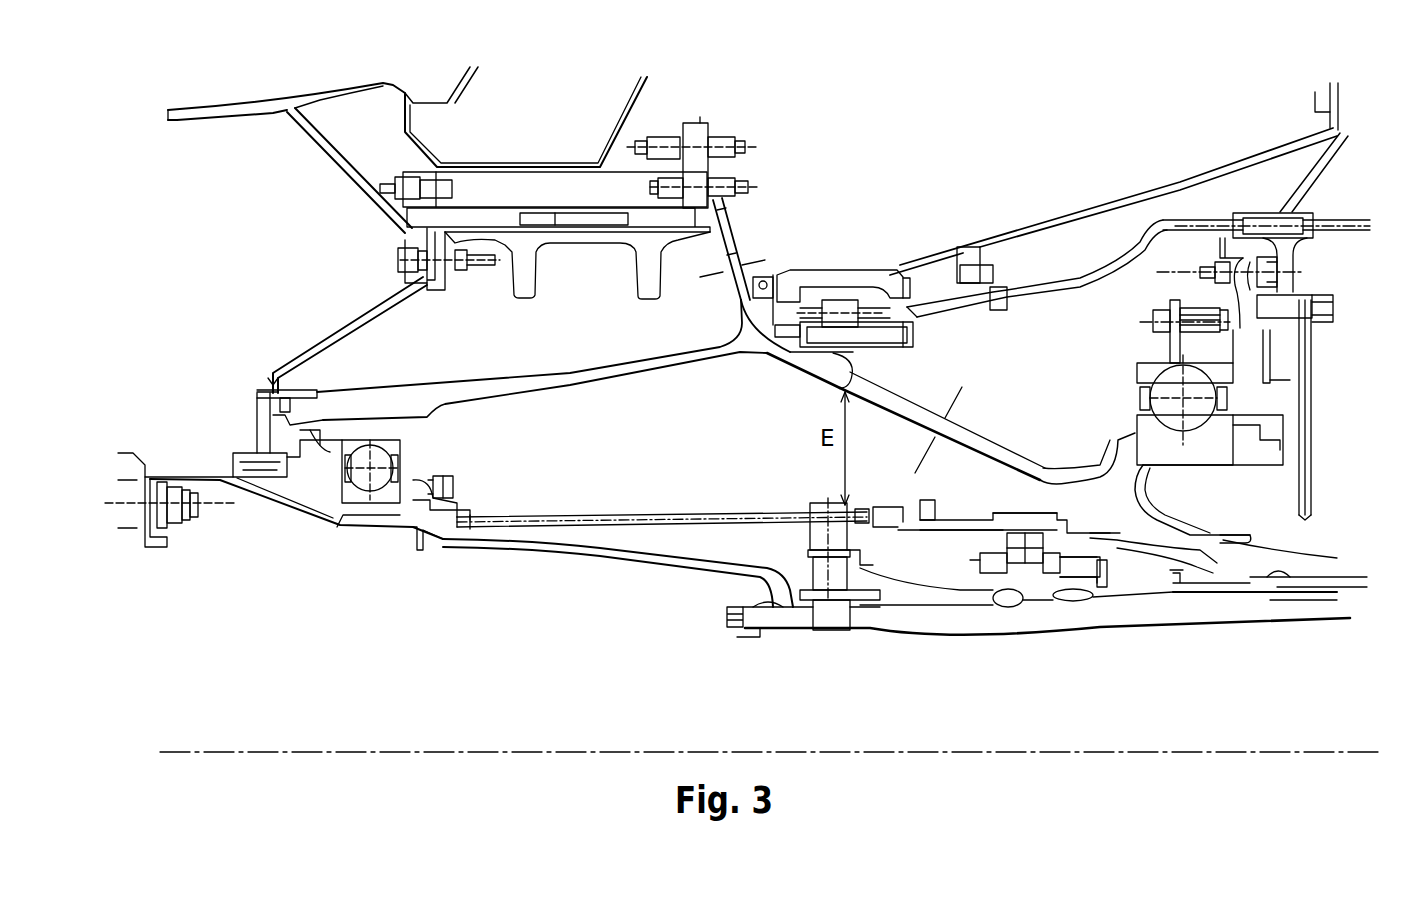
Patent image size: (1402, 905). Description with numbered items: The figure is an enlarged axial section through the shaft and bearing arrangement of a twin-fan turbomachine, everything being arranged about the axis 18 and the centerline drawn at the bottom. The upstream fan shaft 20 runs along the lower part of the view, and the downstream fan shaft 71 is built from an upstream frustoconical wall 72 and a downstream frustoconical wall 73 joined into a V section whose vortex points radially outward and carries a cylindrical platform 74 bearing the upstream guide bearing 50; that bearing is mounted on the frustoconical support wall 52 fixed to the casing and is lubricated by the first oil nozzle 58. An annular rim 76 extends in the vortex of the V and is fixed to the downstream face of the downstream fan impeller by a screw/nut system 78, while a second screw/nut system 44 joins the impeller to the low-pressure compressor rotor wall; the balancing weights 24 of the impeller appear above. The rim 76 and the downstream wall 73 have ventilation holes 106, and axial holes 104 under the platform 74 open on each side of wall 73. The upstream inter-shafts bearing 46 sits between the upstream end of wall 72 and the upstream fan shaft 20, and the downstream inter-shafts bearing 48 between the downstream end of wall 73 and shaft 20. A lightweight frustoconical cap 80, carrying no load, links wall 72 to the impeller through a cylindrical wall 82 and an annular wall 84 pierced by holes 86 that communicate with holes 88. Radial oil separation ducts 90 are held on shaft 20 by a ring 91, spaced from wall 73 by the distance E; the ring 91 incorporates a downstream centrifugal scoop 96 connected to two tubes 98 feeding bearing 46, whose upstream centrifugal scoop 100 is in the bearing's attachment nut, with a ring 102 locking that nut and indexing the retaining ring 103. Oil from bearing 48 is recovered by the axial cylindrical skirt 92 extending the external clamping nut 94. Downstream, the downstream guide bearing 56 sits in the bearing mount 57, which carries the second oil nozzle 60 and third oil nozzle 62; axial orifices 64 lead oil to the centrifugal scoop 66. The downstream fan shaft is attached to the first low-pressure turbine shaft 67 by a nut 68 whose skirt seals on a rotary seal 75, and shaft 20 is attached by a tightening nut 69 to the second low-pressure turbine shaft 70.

The axis 18 is at (570, 751).
The upstream fan shaft 20 is at (615, 560).
The weights 24 is at (545, 278).
The screw/nut system 44 is at (742, 140).
The upstream inter-shafts bearing 46 is at (360, 515).
The downstream inter-shafts bearing 48 is at (1010, 552).
The upstream guide bearing 50 is at (842, 300).
The frustoconical support wall 52 is at (1112, 198).
The downstream guide bearing 56 is at (1160, 375).
The bearing mount 57 is at (1310, 180).
The first oil nozzle 58 is at (1093, 280).
The second oil nozzle 60 is at (1305, 362).
The third oil nozzle 62 is at (1310, 520).
The axial orifices 64 is at (1212, 533).
The centrifugal scoop 66 is at (1240, 530).
The first low-pressure turbine shaft 67 is at (1275, 592).
The nut 68 is at (1198, 590).
The tightening nut 69 is at (768, 598).
The second low-pressure turbine shaft 70 is at (1043, 612).
The downstream fan shaft 71 is at (1021, 428).
The upstream frustoconical wall 72 is at (590, 385).
The downstream frustoconical wall 73 is at (1065, 445).
The cylindrical platform 74 is at (880, 356).
The rotary seal 75 is at (1100, 560).
The annular rim 76 is at (735, 225).
The screw/nut system 78 is at (740, 178).
The frustoconical cap 80 is at (326, 316).
The cylindrical wall 82 is at (300, 388).
The annular wall 84 is at (240, 433).
The holes 86 is at (258, 400).
The holes 88 is at (268, 378).
The radial oil separation ducts 90 is at (810, 505).
The ring 91 is at (873, 542).
The axial cylindrical skirt 92 is at (985, 515).
The external clamping nut 94 is at (960, 520).
The downstream centrifugal scoop 96 is at (885, 505).
The tubes 98 is at (683, 512).
The upstream centrifugal scoop 100 is at (440, 545).
The ring 102 is at (447, 470).
The retaining ring 103 is at (485, 480).
The axial holes 104 is at (820, 360).
The ventilation holes 106 is at (745, 248).